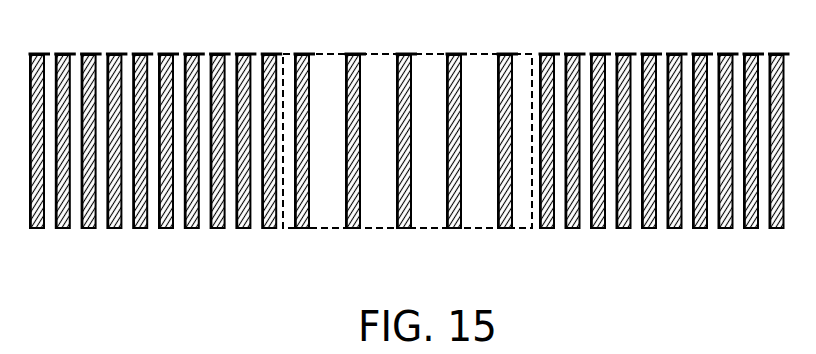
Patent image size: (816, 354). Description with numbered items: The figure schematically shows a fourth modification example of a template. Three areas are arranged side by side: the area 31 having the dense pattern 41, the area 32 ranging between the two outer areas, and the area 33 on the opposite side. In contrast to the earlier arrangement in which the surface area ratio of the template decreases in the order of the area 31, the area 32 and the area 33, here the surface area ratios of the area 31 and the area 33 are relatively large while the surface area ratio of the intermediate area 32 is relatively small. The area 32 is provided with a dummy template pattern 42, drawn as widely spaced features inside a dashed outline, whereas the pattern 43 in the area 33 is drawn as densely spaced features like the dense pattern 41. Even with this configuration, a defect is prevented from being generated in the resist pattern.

The area 31 is at (712, 54).
The area 32 is at (432, 54).
The area 33 is at (186, 54).
The dense pattern 41 is at (661, 146).
The dummy template pattern 42 is at (407, 146).
The third electrode group 43 is at (156, 146).